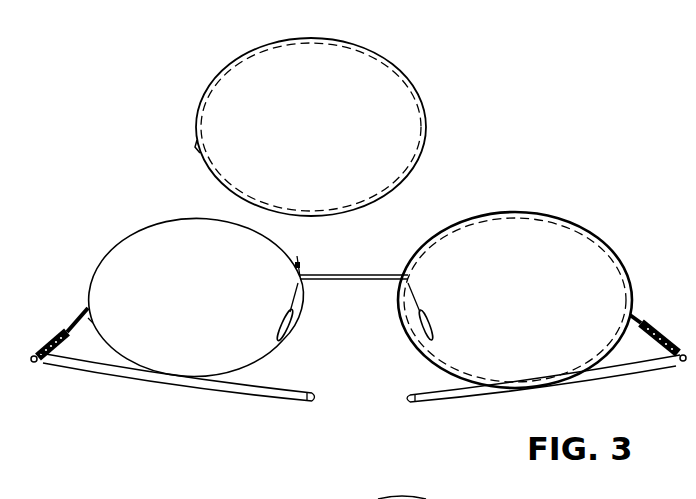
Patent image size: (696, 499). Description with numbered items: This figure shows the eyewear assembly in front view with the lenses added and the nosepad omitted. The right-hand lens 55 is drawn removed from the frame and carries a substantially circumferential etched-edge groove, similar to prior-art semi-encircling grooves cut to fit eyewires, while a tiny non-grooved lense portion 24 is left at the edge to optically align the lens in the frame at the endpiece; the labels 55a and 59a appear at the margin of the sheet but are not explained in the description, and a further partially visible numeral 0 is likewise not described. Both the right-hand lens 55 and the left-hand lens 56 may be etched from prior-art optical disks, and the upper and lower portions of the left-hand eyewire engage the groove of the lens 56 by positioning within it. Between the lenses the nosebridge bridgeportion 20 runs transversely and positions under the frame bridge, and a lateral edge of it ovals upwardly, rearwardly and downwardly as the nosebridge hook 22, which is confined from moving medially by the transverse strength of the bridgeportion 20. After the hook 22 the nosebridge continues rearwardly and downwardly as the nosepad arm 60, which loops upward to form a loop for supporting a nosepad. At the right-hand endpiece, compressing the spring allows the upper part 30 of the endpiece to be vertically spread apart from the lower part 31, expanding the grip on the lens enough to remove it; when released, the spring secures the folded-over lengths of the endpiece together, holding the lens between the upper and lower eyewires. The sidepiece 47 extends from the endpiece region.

The lens 55 is at (327, 150).
The non-grooved lense portion 24 is at (196, 147).
The lens 55a is at (7, 118).
The lens 59a is at (7, 163).
The nosebridge bridgeportion 20 is at (350, 282).
The nosebridge hook 22 is at (306, 265).
The nosebridge nosepad arm 60 is at (290, 302).
The upper part of RHS endpiece 30 is at (72, 322).
The lower part of RHS endpiece 31 is at (82, 330).
The temple end (partially visible numeral) 0 is at (34, 357).
The sidepiece 47 is at (281, 394).
The lens 56 is at (533, 313).